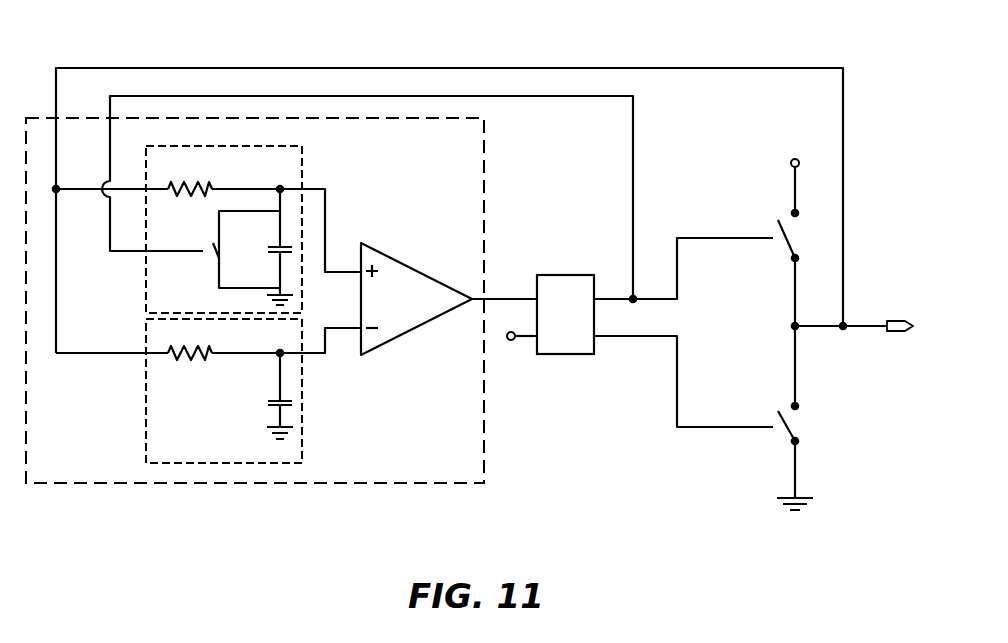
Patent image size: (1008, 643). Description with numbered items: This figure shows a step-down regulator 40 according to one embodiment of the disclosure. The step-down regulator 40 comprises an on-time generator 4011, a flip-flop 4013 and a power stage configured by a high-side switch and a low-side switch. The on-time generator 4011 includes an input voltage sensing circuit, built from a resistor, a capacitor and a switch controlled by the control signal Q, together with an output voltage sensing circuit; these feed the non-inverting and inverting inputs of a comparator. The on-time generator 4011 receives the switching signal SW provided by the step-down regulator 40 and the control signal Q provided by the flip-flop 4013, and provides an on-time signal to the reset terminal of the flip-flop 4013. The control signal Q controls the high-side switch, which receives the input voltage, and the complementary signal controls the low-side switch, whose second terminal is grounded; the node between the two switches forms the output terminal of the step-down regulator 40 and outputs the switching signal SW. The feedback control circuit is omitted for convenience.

The step-down regulator 40 is at (450, 67).
The on-time generator 4011 is at (365, 505).
The flip-flop 4013 is at (563, 357).